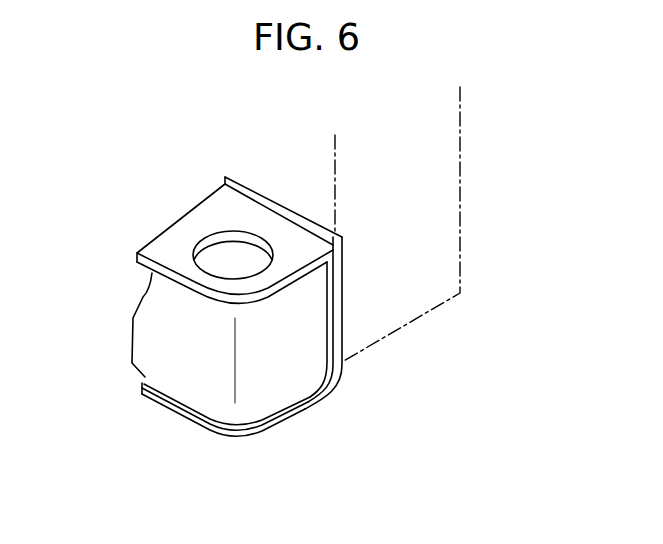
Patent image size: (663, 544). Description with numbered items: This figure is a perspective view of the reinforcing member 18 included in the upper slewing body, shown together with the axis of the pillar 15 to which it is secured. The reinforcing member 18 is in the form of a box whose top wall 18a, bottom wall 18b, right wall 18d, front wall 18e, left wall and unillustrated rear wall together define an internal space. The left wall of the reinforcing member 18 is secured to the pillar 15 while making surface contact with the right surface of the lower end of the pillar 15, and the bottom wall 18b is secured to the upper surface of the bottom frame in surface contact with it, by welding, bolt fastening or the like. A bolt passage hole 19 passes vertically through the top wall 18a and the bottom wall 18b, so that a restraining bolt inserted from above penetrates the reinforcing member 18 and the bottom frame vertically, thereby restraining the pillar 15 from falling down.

The pillar 15 is at (450, 202).
The reinforcing member 18 is at (135, 303).
The top wall 18a is at (218, 212).
The bottom wall 18b is at (218, 435).
The right wall 18d is at (158, 353).
The front wall 18e is at (278, 365).
The bolt passage hole 19 is at (212, 255).